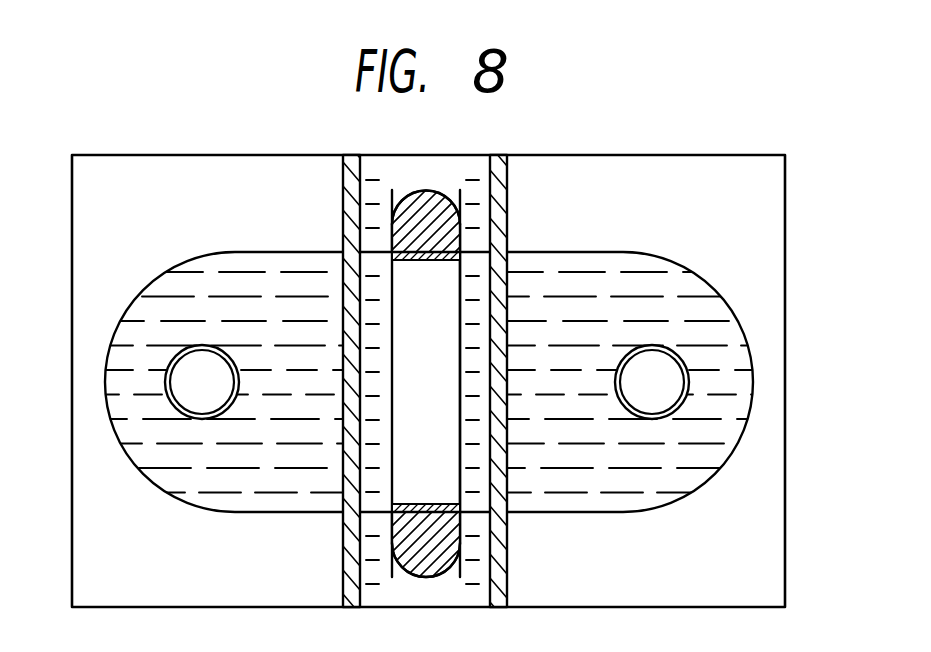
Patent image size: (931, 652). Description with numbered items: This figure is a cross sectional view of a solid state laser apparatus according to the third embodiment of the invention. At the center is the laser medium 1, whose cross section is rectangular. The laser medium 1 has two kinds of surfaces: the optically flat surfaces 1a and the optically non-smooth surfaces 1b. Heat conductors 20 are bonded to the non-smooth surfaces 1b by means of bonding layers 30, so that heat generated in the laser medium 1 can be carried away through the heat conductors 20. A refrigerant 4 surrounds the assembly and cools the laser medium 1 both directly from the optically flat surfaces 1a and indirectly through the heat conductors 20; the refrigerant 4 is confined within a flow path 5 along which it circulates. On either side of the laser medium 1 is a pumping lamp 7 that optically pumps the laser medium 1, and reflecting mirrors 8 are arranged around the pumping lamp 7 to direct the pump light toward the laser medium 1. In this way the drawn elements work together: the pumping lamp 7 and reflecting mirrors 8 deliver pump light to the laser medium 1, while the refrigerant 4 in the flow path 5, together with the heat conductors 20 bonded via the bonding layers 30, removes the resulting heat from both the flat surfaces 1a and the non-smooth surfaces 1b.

The laser medium 1 is at (433, 355).
The optically flat surfaces 1a is at (392, 397).
The optically non-smooth surfaces 1b is at (412, 505).
The refrigerant 4 is at (473, 262).
The flow path 5 is at (503, 314).
The pumping lamp 7 is at (185, 375).
The reflecting mirrors 8 is at (134, 300).
The heat conductors 20 is at (418, 197).
The bonding layers 30 is at (470, 234).